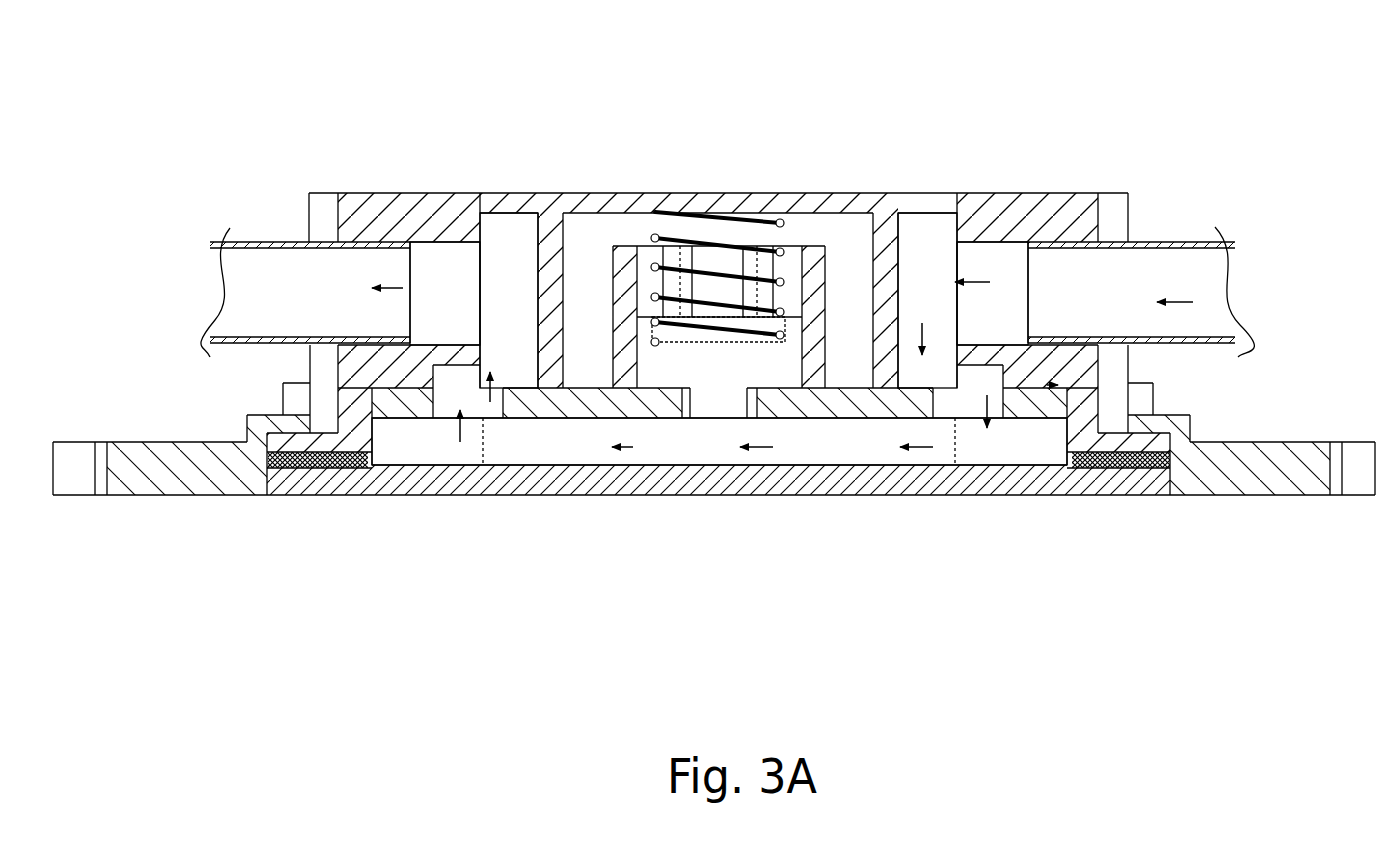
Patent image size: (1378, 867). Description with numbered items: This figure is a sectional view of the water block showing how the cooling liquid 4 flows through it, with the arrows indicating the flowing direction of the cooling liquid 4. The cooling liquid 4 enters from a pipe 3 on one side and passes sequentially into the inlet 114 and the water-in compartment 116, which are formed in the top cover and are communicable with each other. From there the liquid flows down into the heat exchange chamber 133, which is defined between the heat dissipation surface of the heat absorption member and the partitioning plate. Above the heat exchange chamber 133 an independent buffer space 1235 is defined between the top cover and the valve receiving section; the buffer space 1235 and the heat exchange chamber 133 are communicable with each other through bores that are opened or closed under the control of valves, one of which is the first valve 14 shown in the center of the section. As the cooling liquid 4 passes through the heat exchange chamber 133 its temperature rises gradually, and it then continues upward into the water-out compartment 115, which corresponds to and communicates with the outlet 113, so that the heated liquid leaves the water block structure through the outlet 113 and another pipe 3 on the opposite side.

The pipe 3 is at (236, 243).
The cooling liquid 4 is at (1168, 305).
The outlet 113 is at (444, 295).
The inlet 114 is at (1005, 268).
The water-out compartment 115 is at (507, 250).
The water-in compartment 116 is at (922, 255).
The buffer space 1235 is at (622, 225).
The heat exchange chamber 133 is at (420, 445).
The first valve 14 is at (735, 365).